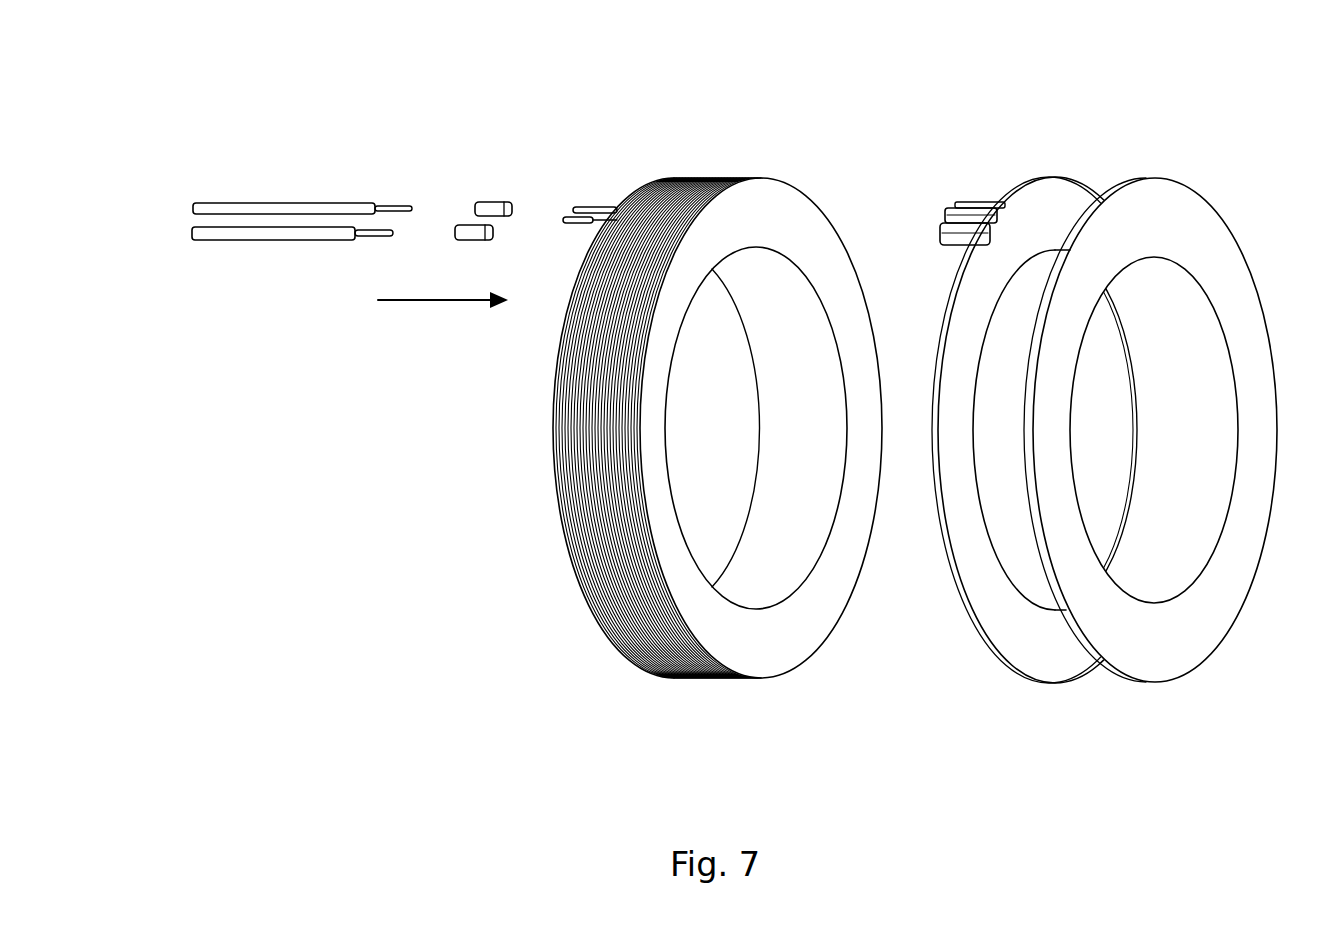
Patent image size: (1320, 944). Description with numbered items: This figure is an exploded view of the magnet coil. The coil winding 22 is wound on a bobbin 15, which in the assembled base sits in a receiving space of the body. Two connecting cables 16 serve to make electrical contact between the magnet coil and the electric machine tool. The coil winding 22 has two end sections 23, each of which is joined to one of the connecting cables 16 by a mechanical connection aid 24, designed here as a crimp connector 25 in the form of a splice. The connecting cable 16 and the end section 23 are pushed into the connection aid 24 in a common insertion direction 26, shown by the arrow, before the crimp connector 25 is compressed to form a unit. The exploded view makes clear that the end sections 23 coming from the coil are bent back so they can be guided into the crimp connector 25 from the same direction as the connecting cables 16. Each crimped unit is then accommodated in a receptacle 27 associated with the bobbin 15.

The bobbin 15 is at (1028, 712).
The connecting cable 16 is at (235, 208).
The coil winding 22 is at (740, 223).
The end section 23 is at (585, 222).
The connection aid 24 is at (499, 205).
The crimp connector 25 is at (493, 240).
The insertion direction 26 is at (440, 312).
The receptacle 27 is at (970, 212).